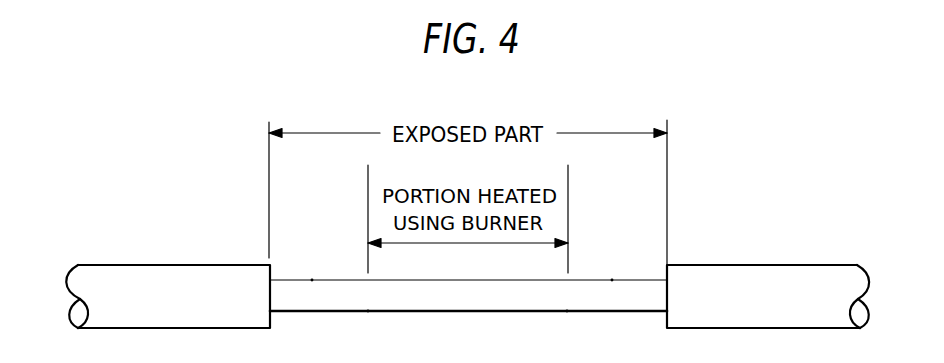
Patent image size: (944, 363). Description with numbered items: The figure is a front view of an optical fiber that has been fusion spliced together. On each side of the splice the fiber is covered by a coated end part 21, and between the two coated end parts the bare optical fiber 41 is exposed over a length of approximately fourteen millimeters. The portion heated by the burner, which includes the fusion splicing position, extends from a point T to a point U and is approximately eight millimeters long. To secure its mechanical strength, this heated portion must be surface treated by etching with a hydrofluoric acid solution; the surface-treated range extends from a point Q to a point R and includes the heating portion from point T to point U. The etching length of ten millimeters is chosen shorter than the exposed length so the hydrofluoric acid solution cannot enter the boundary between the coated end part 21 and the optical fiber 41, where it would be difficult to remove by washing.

The coated end part 21 is at (752, 277).
The optical fiber 41 is at (302, 303).
The point Q is at (312, 279).
The point R is at (612, 279).
The point T is at (368, 313).
The point U is at (567, 313).